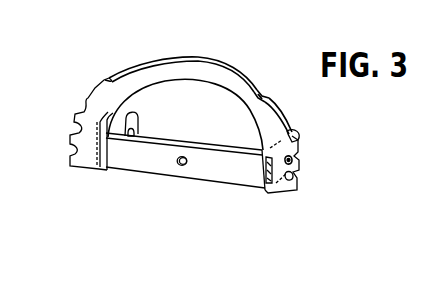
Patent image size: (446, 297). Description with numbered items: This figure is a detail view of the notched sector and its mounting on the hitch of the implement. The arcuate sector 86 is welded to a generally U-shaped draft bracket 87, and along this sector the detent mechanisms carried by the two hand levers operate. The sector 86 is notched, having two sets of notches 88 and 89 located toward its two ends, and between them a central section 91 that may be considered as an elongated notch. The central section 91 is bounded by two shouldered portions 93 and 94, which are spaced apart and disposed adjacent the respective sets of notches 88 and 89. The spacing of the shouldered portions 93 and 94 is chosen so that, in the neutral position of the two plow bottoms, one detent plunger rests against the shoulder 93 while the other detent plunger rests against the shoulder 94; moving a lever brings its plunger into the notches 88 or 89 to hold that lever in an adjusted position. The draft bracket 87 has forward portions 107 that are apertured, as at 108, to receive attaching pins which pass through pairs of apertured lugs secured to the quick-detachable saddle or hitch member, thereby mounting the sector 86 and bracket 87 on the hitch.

The arcuate sector 86 is at (243, 69).
The draft bracket 87 is at (221, 188).
The set of notches 88 is at (70, 148).
The set of notches 89 is at (303, 177).
The central section 91 is at (185, 57).
The shouldered portion 93 is at (267, 97).
The shouldered portion 94 is at (110, 77).
The forward portion 107 is at (133, 123).
The aperture 108 is at (135, 130).